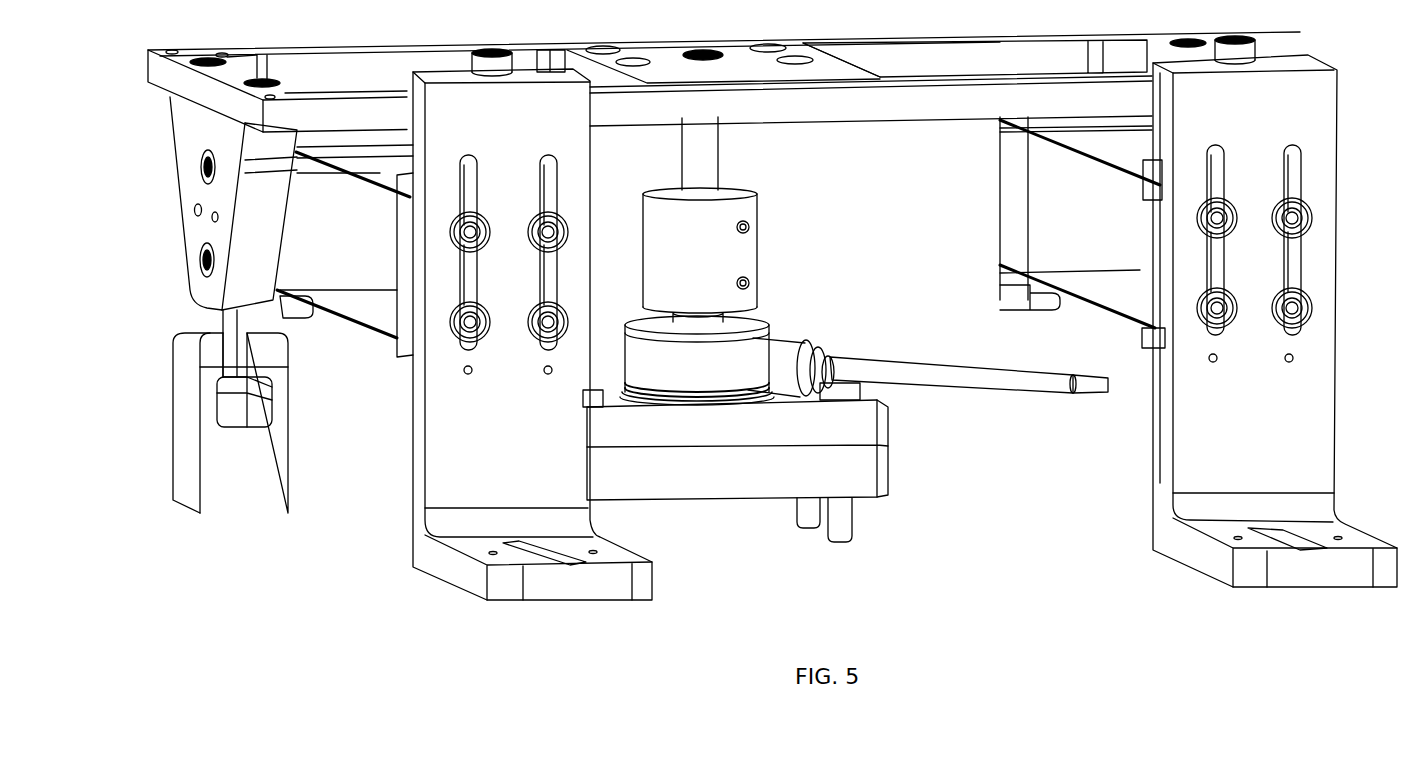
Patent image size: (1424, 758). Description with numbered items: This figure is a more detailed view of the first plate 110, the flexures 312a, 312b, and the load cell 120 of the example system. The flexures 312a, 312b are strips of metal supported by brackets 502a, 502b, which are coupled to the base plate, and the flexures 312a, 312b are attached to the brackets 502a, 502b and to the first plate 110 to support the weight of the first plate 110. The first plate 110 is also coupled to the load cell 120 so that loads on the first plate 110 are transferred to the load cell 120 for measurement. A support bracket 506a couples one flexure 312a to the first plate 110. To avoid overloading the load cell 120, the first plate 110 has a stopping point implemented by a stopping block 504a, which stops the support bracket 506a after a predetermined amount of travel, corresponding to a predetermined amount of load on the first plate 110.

The first plate 110 is at (178, 48).
The load cell 120 is at (762, 320).
The flexure 312a is at (374, 348).
The flexure 312b is at (1077, 312).
The bracket 502a is at (432, 440).
The bracket 502b is at (1177, 438).
The stopping block 504a is at (187, 462).
The support bracket 506a is at (190, 237).